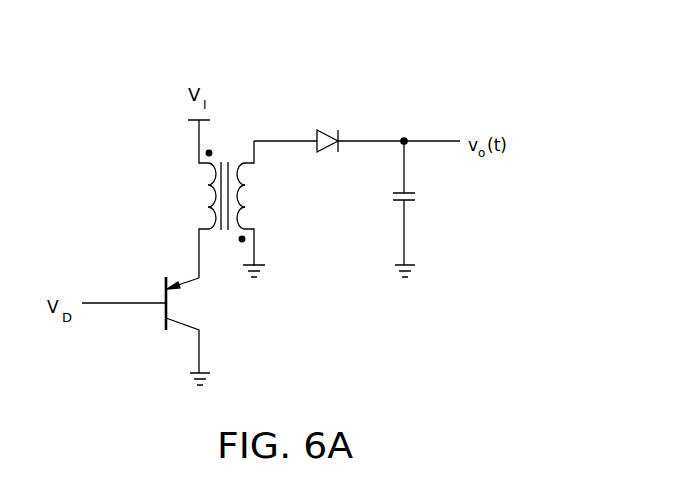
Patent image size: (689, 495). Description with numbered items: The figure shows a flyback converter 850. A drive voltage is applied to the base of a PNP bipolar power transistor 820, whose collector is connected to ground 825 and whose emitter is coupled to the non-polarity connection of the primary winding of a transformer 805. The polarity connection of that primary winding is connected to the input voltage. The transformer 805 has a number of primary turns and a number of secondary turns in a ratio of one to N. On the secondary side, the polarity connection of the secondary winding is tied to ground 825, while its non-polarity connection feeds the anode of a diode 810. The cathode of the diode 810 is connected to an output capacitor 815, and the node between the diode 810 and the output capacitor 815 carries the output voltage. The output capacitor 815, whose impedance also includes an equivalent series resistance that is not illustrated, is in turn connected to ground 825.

The transformer 805 is at (202, 196).
The diode 810 is at (332, 131).
The output capacitor 815 is at (395, 197).
The PNP bipolar power transistor 820 is at (163, 315).
The ground 825 is at (265, 272).
The flyback converter 850 is at (448, 98).